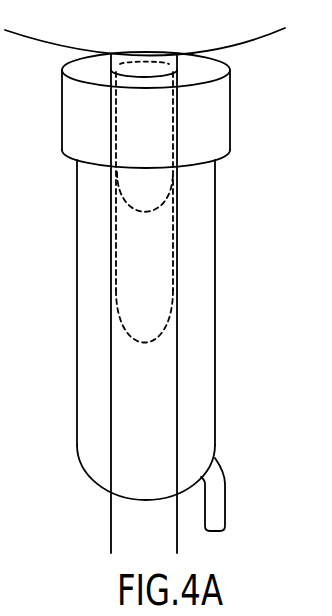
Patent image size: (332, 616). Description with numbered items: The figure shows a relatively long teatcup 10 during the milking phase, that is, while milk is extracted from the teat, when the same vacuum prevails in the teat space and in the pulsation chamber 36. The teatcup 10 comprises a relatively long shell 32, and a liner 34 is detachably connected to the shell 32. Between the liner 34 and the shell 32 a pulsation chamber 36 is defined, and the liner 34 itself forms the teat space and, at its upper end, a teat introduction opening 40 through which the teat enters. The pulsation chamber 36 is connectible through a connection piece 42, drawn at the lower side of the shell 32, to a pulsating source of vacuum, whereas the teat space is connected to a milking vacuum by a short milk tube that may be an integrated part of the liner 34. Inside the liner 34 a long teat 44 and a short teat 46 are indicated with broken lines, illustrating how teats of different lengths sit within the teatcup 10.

The teatcup 10 is at (228, 290).
The shell 32 is at (193, 402).
The liner 34 is at (180, 350).
The pulsation chamber 36 is at (200, 267).
The teat introduction opening 40 is at (148, 70).
The connection piece 42 is at (217, 503).
The long teat 44 is at (137, 295).
The short teat 46 is at (150, 190).